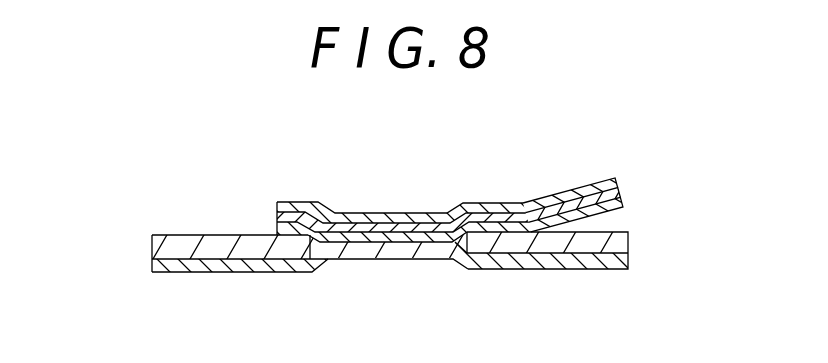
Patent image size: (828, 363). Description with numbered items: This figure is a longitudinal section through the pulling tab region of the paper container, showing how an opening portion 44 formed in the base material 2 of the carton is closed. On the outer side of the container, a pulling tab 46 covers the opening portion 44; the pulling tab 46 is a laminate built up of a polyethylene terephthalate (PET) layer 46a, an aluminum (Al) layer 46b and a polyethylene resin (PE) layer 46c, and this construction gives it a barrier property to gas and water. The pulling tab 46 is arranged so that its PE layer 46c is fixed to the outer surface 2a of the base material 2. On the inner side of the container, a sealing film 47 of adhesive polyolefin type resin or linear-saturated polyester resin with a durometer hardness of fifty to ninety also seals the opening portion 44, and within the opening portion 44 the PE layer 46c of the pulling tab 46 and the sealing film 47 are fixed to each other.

The base material 2 is at (152, 245).
The outer surface of the base material 2a is at (152, 268).
The sealing film 47 is at (190, 267).
The opening portion 44 is at (403, 280).
The pulling tab 46 is at (468, 191).
The polyethylene terephthalate (PET) layer 46a is at (598, 181).
The aluminum (Al) layer 46b is at (622, 190).
The polyethylene resin (PE) layer 46c is at (627, 206).